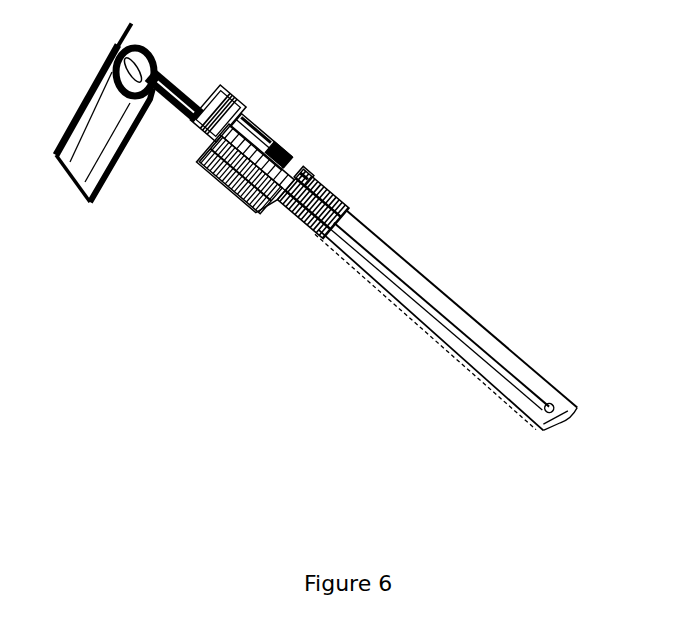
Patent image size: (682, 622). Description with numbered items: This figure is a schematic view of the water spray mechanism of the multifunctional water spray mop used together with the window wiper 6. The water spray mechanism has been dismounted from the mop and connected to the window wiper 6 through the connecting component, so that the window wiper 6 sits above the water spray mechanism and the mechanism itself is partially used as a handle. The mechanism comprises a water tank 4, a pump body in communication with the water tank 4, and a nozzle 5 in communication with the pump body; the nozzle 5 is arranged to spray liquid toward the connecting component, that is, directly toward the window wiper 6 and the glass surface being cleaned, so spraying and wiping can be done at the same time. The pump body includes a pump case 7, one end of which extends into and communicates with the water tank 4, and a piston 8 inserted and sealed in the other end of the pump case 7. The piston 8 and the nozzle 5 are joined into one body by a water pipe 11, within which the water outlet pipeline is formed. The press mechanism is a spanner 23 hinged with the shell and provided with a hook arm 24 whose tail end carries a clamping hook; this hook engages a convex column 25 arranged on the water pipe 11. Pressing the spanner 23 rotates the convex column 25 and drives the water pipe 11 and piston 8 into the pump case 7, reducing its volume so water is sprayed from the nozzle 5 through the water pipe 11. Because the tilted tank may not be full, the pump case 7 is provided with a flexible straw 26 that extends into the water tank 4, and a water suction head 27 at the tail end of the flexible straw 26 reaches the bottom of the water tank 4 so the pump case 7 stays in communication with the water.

The water tank 4 is at (363, 223).
The nozzle 5 is at (208, 140).
The window wiper 6 is at (97, 68).
The pump case 7 is at (328, 182).
The piston 8 is at (303, 177).
The water pipe 11 is at (262, 138).
The spanner 23 is at (250, 203).
The hook arm 24 is at (212, 174).
The convex column 25 is at (280, 157).
The flexible straw 26 is at (380, 257).
The water suction head 27 is at (556, 402).